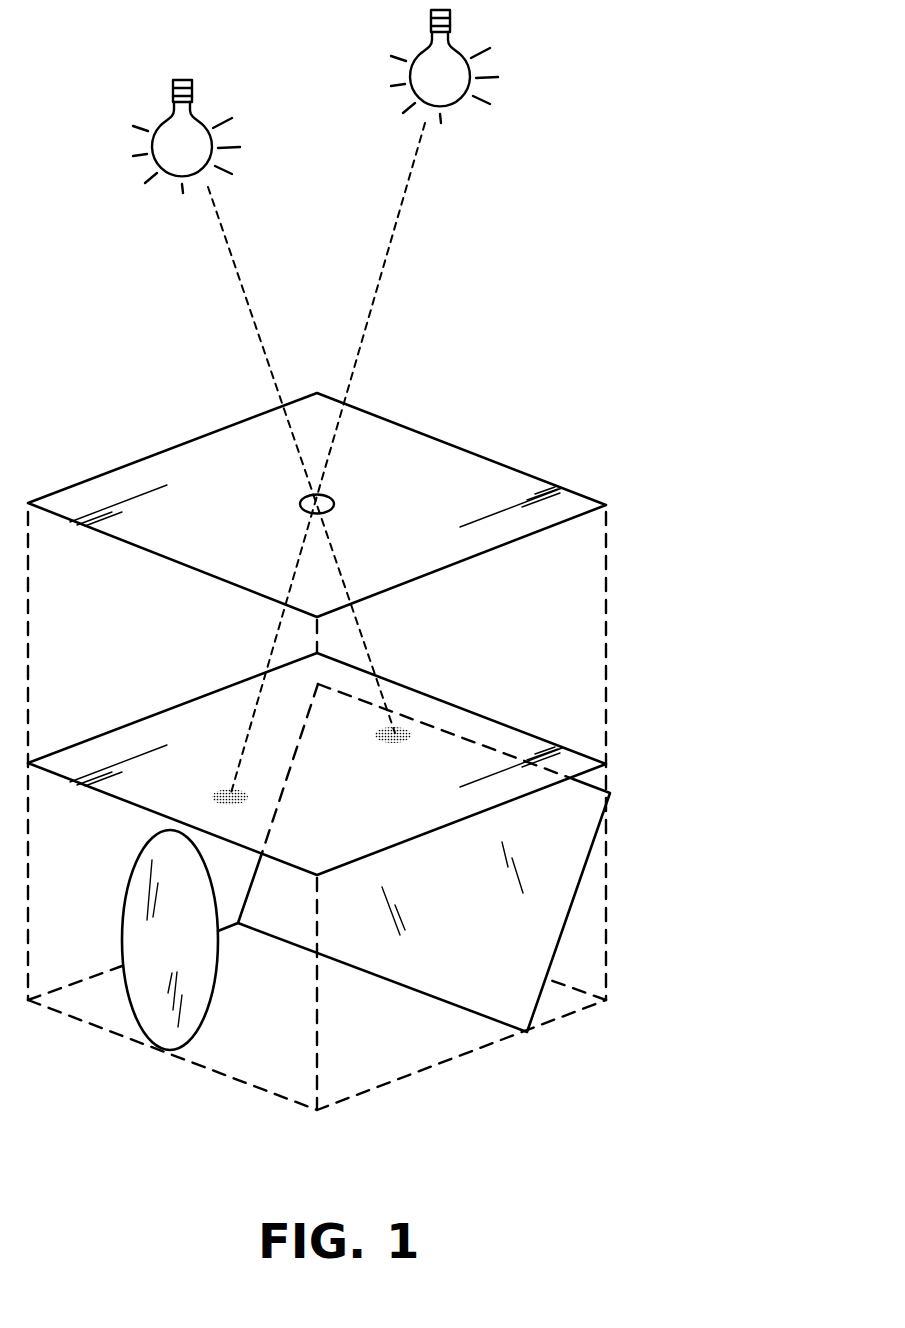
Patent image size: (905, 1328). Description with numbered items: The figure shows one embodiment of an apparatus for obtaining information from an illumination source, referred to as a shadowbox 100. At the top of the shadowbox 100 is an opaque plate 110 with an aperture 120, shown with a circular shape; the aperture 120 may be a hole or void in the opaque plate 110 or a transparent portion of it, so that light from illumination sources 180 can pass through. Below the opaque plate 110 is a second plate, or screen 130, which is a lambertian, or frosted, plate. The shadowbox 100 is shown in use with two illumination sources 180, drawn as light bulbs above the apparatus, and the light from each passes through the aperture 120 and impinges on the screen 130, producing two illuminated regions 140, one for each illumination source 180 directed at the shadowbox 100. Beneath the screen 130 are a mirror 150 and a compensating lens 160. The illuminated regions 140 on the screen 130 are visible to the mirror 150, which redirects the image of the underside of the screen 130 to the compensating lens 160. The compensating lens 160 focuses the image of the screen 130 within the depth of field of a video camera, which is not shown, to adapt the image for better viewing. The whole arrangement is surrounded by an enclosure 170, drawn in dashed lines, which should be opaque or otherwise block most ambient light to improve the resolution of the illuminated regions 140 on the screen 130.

The shadowbox 100 is at (118, 402).
The opaque plate 110 is at (513, 478).
The aperture 120 is at (333, 496).
The screen 130 is at (507, 733).
The illuminated regions 140 is at (221, 787).
The mirror 150 is at (448, 982).
The compensating lens 160 is at (127, 885).
The enclosure 170 is at (397, 1085).
The illumination sources 180 is at (168, 117).